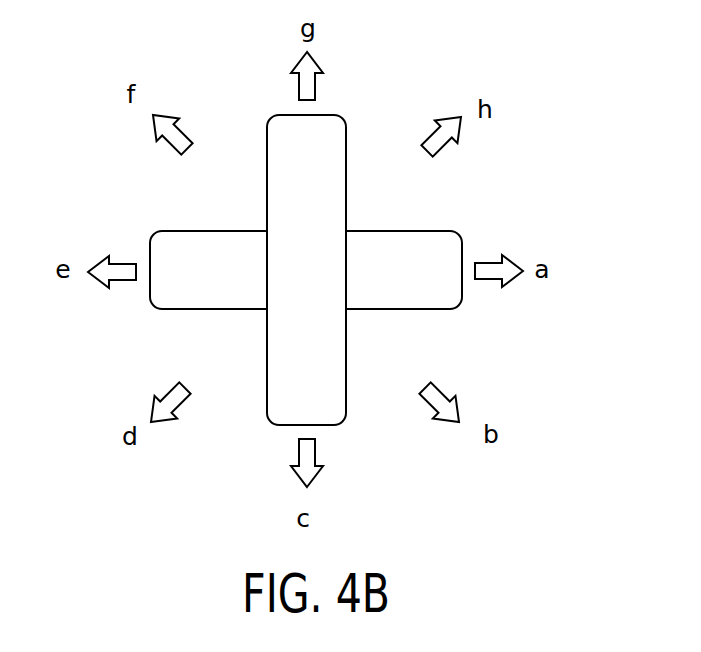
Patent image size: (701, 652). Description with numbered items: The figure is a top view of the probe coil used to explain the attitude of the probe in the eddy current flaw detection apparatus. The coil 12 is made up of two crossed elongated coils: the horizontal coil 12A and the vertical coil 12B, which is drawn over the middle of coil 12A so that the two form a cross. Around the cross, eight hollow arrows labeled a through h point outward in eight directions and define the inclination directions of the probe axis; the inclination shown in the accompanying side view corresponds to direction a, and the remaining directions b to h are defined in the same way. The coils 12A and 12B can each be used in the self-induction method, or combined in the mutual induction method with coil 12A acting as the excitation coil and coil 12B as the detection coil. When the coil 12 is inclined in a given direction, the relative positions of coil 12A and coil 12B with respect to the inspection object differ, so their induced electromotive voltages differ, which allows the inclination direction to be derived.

The coil 12 is at (382, 270).
The coil 12A is at (448, 239).
The coil 12B is at (339, 360).